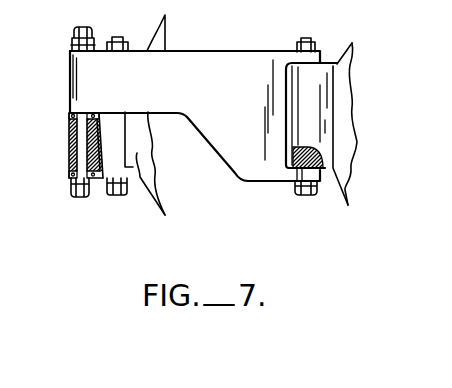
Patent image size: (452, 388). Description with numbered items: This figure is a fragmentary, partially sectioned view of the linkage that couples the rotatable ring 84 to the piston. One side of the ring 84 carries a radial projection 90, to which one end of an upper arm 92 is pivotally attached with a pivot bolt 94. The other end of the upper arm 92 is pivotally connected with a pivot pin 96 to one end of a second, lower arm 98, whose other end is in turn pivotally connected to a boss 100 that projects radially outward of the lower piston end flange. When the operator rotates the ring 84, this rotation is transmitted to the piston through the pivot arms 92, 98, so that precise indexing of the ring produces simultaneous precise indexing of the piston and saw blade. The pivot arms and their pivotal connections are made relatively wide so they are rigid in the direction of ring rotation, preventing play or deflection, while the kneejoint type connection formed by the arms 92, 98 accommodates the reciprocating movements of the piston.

The ring 84 is at (352, 43).
The radial projection 90 is at (300, 93).
The upper arm 92 is at (232, 152).
The pivot bolt 94 is at (306, 195).
The pivot pin 96 is at (78, 152).
The lower arm 98 is at (103, 178).
The boss 100 is at (133, 167).